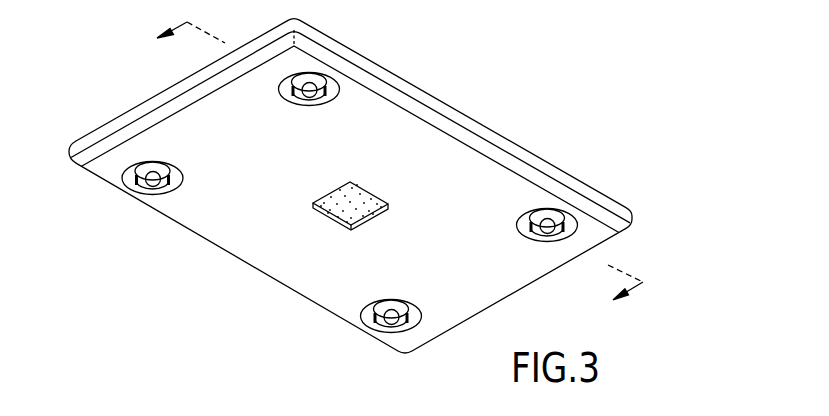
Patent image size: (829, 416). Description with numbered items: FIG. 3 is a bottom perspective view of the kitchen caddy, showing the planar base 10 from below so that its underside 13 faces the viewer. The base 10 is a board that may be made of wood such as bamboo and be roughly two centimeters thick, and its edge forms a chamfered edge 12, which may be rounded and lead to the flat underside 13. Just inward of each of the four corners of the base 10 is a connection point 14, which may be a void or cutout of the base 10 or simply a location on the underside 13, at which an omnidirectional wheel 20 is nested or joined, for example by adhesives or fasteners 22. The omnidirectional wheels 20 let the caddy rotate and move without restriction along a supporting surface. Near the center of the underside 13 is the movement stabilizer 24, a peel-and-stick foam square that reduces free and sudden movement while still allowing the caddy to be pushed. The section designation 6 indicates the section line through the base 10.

The section line 6- 6 is at (389, 171).
The planar base 10 is at (123, 114).
The chamfered edge 12 is at (198, 100).
The underside 13 is at (453, 202).
The connection point 14 is at (173, 191).
The omnidirectional wheel 20 is at (313, 101).
The fastener 22 is at (371, 319).
The movement stabilizer 24 is at (339, 225).